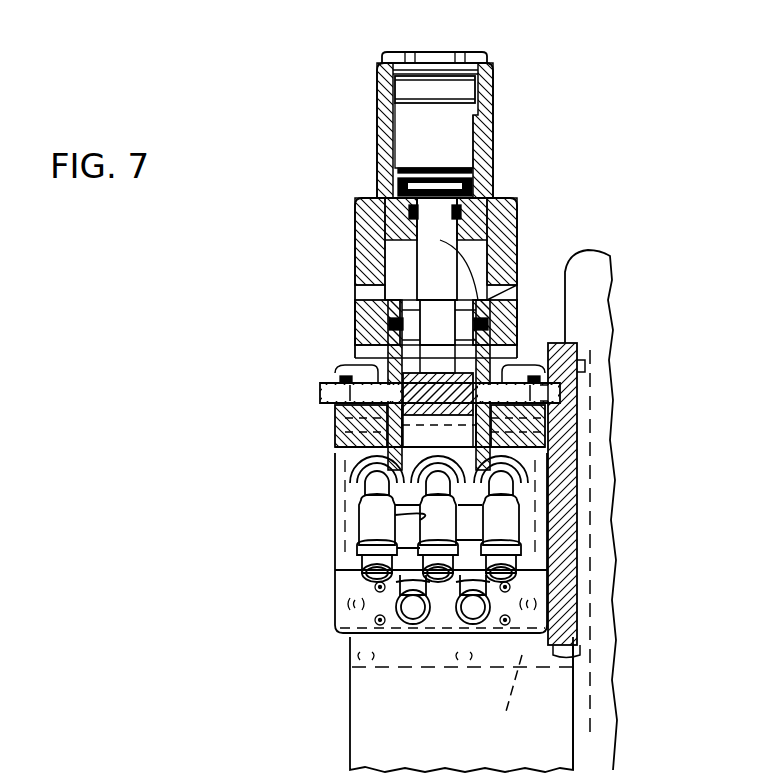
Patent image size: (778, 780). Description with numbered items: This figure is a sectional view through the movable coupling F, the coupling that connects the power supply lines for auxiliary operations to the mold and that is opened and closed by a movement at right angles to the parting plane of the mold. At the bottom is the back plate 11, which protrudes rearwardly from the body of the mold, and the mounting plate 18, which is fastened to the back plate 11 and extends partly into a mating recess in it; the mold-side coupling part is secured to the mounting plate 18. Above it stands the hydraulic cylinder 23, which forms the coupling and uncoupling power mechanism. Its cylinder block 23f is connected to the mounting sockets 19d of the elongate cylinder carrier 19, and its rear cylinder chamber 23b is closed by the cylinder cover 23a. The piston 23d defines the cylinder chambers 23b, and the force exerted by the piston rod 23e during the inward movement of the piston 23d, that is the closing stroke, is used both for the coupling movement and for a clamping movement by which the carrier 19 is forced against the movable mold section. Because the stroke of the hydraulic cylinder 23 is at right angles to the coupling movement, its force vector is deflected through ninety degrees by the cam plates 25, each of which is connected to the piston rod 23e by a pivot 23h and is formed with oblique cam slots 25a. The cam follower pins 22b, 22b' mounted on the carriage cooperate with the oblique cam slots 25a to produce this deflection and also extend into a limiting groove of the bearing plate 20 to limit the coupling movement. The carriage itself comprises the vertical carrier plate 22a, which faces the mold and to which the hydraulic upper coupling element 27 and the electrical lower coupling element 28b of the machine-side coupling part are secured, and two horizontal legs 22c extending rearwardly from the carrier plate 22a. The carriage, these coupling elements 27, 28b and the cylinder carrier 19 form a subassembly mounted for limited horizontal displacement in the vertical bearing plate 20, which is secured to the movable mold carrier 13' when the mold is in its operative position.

The back plate 11 is at (365, 733).
The movable mold carrier 13' is at (637, 482).
The mounting plate 18 is at (507, 702).
The cylinder carrier 19 is at (440, 388).
The mounting sockets 19d is at (578, 365).
The bearing plate 20 is at (560, 343).
The carrier plate 22a is at (540, 535).
The cam follower pins 22b is at (617, 380).
The flange 22b' is at (378, 375).
The horizontal legs 22c is at (335, 450).
The hydraulic cylinder 23 is at (375, 95).
The cylinder cover 23a is at (470, 55).
The cylinder chambers 23b is at (455, 130).
The piston 23d is at (455, 178).
The piston rod 23e is at (455, 245).
The cylinder block 23f is at (370, 218).
The pivot 23h is at (410, 320).
The cam plate 25 is at (392, 300).
The oblique cam slots 25a is at (360, 447).
The hydraulic upper coupling element 27 is at (505, 525).
The electrical lower coupling element 28b is at (333, 612).
The movable coupling F is at (330, 548).